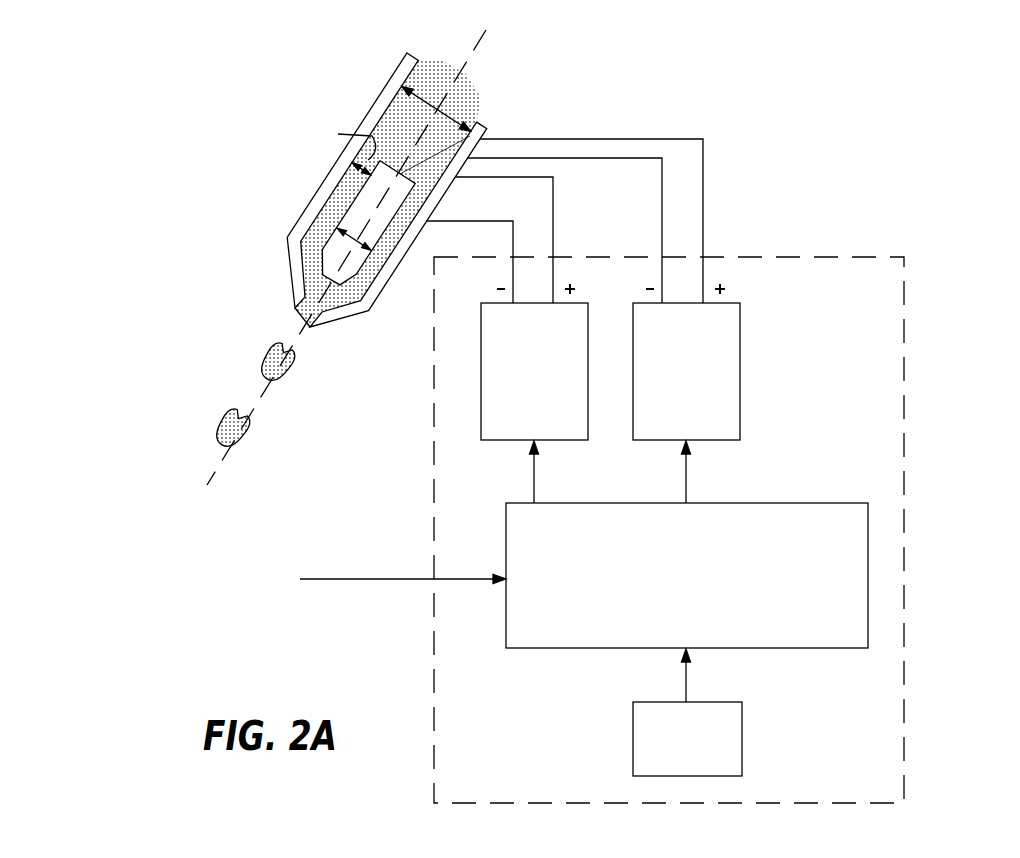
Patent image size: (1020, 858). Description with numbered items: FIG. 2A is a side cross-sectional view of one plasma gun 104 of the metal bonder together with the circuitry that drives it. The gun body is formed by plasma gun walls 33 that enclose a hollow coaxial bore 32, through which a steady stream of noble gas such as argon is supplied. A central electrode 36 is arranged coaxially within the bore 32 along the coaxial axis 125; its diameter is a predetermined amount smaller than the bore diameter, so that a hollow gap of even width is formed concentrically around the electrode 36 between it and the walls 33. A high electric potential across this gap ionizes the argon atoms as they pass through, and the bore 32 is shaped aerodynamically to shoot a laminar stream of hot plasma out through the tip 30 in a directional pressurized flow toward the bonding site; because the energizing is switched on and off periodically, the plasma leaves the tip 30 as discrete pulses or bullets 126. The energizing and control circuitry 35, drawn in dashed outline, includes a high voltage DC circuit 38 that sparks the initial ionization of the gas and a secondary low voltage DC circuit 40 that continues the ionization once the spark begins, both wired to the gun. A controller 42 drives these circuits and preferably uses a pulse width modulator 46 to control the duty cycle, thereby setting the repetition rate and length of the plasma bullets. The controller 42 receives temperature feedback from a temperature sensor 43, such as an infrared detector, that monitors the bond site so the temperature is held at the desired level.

The plasma spray gun 104 is at (373, 67).
The spray axis 125 is at (432, 72).
The hollow coaxial bore 32 is at (388, 133).
The plasma gun walls 33 is at (303, 227).
The central electrode 36 is at (353, 188).
The tip 30 is at (296, 312).
The molten particles 126 is at (243, 440).
The control system 35 is at (826, 258).
The high voltage DC circuit 38 is at (546, 384).
The secondary low voltage DC circuit 40 is at (699, 384).
The controller 42 is at (698, 605).
The pulse width modulator 46 is at (699, 766).
The temperature sensor 43 is at (223, 624).